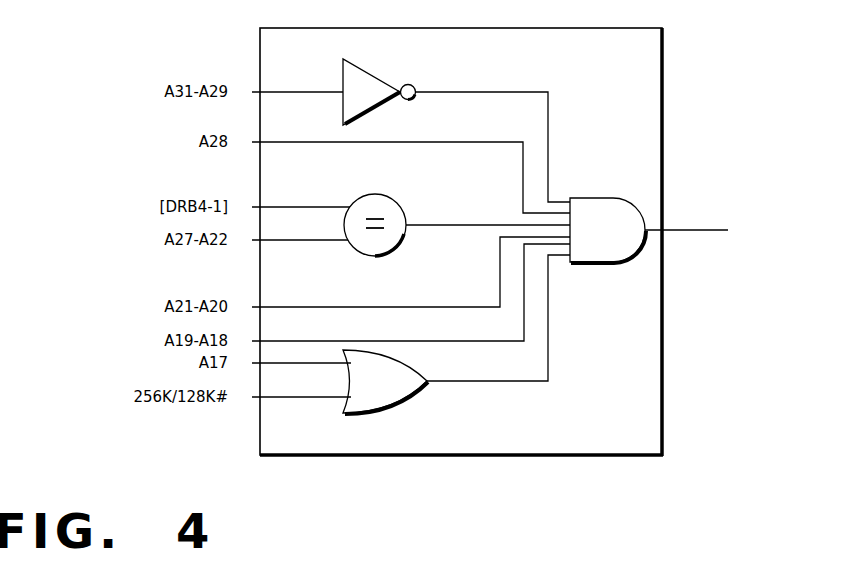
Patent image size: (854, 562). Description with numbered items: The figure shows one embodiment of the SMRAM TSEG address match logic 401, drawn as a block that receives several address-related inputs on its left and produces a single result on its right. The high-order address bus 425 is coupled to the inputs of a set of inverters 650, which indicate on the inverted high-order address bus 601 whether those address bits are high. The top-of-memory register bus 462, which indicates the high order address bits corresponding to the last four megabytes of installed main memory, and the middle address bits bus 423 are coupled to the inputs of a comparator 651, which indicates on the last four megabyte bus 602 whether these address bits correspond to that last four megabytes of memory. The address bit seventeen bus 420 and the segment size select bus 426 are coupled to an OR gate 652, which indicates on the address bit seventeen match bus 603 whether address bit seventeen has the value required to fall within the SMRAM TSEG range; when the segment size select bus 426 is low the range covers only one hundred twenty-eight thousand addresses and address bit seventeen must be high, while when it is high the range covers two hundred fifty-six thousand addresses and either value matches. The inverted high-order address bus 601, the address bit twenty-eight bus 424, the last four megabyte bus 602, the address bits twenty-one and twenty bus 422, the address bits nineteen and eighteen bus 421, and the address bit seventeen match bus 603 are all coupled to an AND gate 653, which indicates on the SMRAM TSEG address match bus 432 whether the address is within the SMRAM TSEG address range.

The SMRAM Top Segment (TSEG) address match logic 401 is at (650, 446).
The A31–A29 bus 425 is at (273, 91).
The A28 bus 424 is at (273, 141).
The [DRB4-1] bus 462 is at (273, 206).
The A27–A22 bus 423 is at (273, 239).
The A21–A20 bus 422 is at (273, 306).
The A19–A18 bus 421 is at (273, 340).
The A17 bus 420 is at (273, 362).
The 256K/128K# bus 426 is at (273, 398).
The inverters 650 is at (375, 101).
The comparator 651 is at (389, 251).
The OR gate 652 is at (400, 390).
The AND gate 653 is at (615, 240).
The A31–A29# bus 601 is at (462, 91).
The last 4 MG bus 602 is at (453, 224).
The A17 match bus 603 is at (449, 380).
The SMRAM TSEG address match bus 432 is at (690, 229).